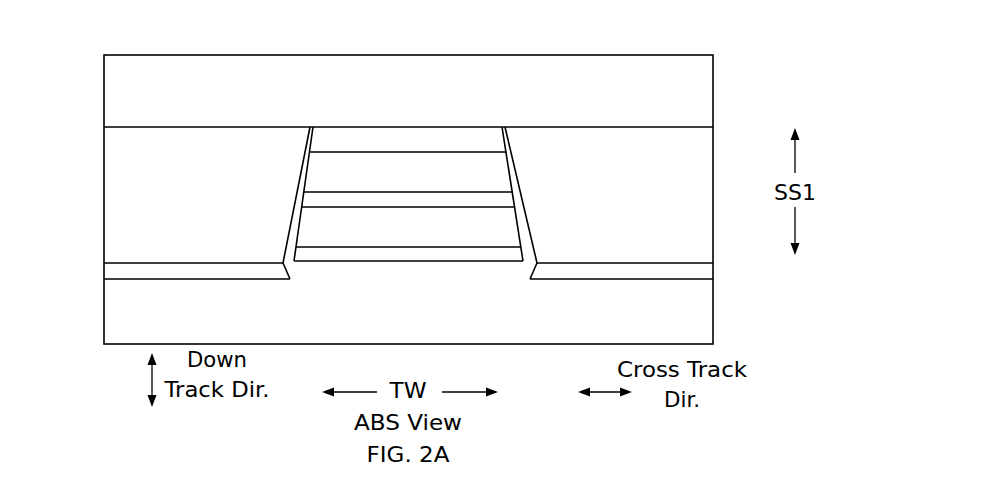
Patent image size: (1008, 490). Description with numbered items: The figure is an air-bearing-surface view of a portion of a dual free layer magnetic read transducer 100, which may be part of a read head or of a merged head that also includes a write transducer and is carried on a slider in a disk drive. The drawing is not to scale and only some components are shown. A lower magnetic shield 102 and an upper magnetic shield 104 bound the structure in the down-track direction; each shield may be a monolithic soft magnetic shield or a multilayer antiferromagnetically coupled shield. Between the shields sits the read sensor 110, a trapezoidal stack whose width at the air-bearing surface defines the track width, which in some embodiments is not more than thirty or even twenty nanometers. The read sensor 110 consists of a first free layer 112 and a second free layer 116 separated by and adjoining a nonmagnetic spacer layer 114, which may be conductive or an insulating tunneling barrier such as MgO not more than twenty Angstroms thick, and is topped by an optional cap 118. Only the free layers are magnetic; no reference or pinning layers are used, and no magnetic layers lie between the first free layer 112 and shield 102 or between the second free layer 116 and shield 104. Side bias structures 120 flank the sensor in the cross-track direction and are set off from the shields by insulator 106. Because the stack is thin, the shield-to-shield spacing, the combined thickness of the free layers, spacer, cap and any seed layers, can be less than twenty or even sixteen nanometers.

The magnetic read transducer 100 is at (429, 25).
The magnetic shield 102 is at (408, 303).
The magnetic shield 104 is at (408, 95).
The insulator 106 is at (103, 268).
The read sensor 110 is at (462, 272).
The first free layer 112 is at (408, 230).
The nonmagnetic spacer layer 114 is at (512, 197).
The second free layer 116 is at (408, 174).
The capping layer 118 is at (408, 141).
The side bias structures 120 is at (417, 194).